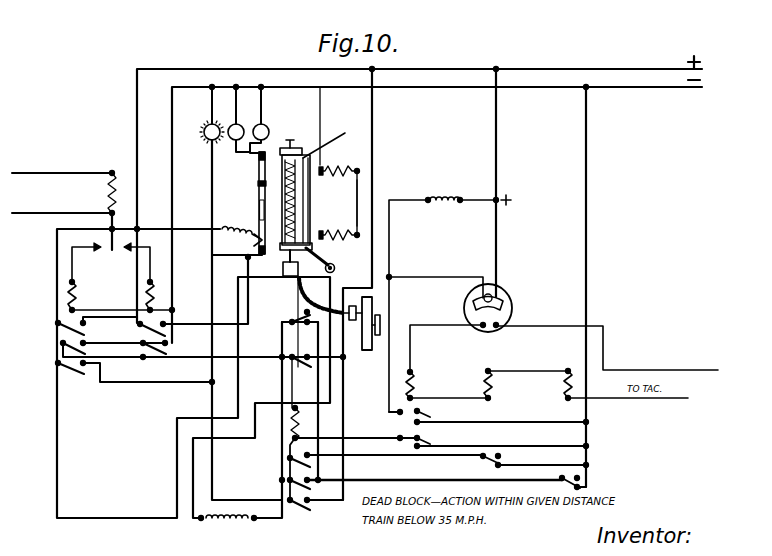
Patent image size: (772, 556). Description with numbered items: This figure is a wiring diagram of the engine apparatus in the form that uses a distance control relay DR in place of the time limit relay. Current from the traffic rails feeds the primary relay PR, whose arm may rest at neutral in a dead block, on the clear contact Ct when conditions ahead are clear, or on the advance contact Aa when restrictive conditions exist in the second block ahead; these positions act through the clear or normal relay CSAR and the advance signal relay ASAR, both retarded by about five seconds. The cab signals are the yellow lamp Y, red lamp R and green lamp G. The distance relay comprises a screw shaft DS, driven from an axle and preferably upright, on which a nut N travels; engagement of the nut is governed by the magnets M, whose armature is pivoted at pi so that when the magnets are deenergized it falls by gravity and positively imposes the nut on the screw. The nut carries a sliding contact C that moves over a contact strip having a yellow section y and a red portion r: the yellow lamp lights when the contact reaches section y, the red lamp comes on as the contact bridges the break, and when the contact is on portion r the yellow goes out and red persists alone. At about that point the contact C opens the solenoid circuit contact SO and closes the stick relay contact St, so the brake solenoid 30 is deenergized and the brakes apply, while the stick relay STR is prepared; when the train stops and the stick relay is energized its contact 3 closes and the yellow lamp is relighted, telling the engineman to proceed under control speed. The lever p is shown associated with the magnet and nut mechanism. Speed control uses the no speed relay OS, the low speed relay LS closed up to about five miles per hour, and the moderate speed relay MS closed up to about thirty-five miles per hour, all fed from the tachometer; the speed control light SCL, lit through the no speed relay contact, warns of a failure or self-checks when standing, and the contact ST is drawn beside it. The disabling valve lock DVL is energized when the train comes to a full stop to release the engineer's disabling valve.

The primary relay PR is at (64, 193).
The advance contact Aa is at (86, 262).
The clear contact Ct is at (131, 262).
The advance signal relay ASAR is at (120, 296).
The clear or normal relay CSAR is at (175, 296).
The yellow cab signal Y is at (212, 118).
The red cab signal R is at (239, 119).
The green cab signal G is at (259, 120).
The red contact strip portion r is at (267, 203).
The screw shaft DS is at (270, 184).
The yellow contact strip section y is at (269, 210).
The sliding contact C is at (250, 236).
The lever p is at (318, 126).
The magnets M is at (339, 196).
The distance control relay DR is at (341, 203).
The nut N is at (328, 254).
The armature pivot pi is at (340, 270).
The disabling valve lock DVL is at (450, 294).
The speed control light SCL is at (505, 308).
The contact ST is at (564, 340).
The no speed relay OS is at (447, 384).
The low speed relay LS is at (522, 375).
The moderate speed relay MS is at (620, 375).
The solenoid circuit contact SO is at (295, 312).
The stick relay circuit contact St is at (296, 373).
The stick relay STR is at (309, 399).
The stick relay contact 3 is at (278, 483).
The brake solenoid 30 is at (228, 532).